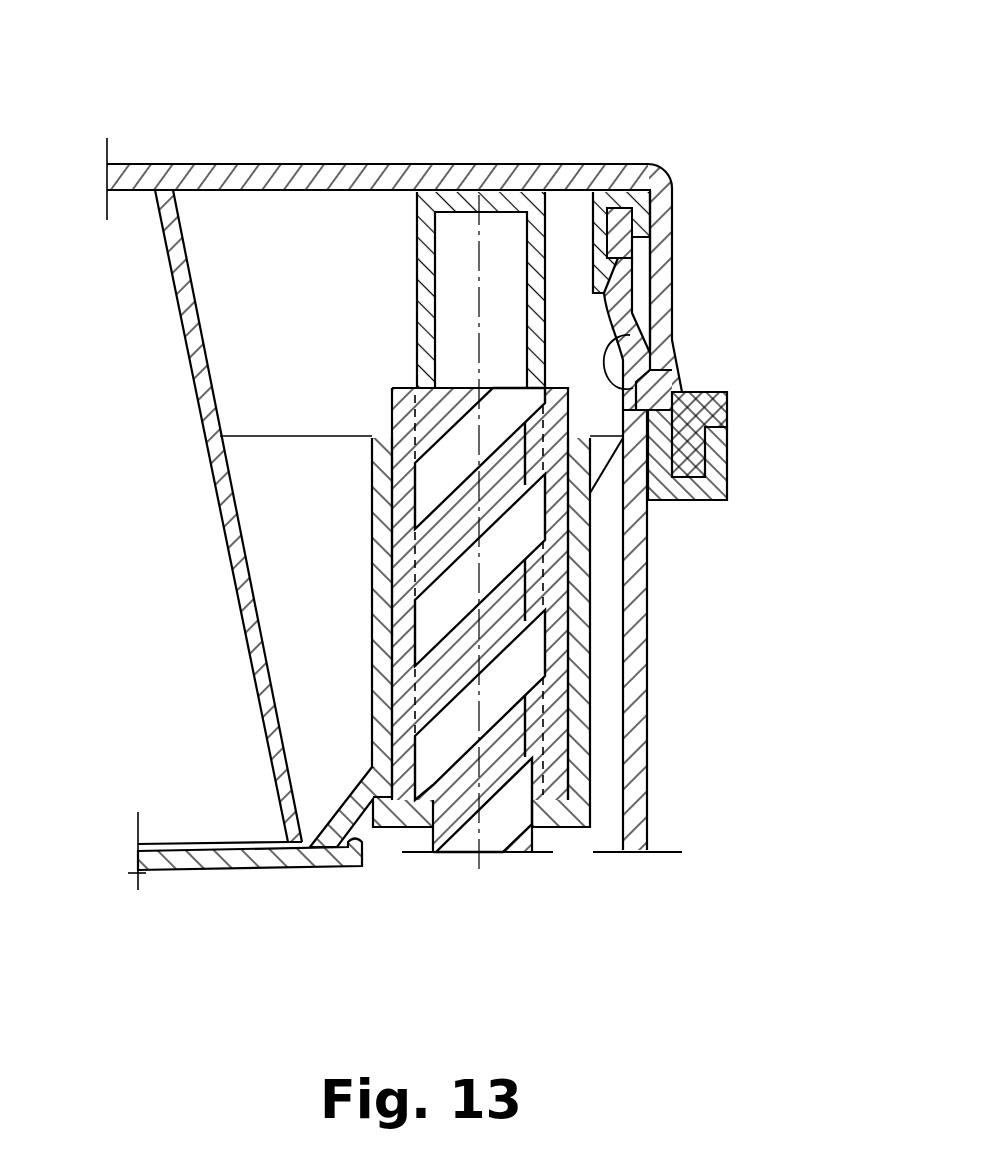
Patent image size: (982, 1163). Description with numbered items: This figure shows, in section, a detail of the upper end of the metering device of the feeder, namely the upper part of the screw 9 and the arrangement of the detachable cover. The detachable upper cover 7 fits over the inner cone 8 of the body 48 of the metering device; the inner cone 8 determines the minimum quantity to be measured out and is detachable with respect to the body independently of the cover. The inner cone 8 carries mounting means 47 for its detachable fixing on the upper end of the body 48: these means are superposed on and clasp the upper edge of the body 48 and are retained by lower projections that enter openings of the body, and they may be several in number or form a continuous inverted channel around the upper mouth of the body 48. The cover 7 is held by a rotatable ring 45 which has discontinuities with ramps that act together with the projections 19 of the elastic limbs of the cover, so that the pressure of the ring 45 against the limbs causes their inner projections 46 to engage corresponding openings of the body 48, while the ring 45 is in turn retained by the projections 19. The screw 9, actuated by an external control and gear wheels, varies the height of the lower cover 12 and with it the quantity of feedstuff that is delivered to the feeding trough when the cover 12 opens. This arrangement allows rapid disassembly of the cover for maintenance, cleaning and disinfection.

The upper cover 7 is at (549, 163).
The inner cone 8 is at (188, 268).
The screw 9 is at (527, 657).
The cover 12 is at (192, 862).
The projections 19 is at (650, 407).
The rotatable ring 45 is at (727, 403).
The inner projections 46 is at (652, 318).
The mounting means 47 is at (603, 232).
The body of the metering device 48 is at (635, 588).